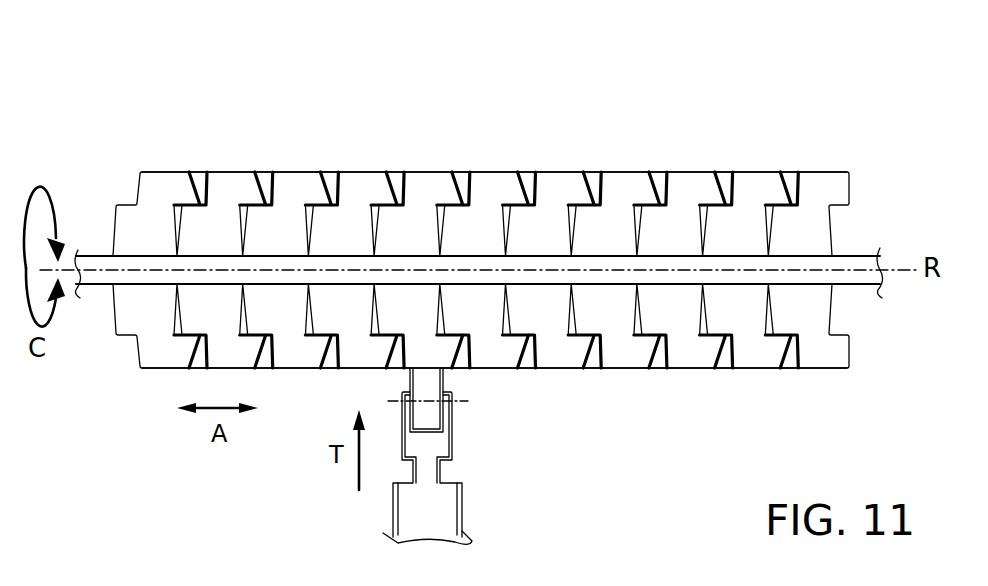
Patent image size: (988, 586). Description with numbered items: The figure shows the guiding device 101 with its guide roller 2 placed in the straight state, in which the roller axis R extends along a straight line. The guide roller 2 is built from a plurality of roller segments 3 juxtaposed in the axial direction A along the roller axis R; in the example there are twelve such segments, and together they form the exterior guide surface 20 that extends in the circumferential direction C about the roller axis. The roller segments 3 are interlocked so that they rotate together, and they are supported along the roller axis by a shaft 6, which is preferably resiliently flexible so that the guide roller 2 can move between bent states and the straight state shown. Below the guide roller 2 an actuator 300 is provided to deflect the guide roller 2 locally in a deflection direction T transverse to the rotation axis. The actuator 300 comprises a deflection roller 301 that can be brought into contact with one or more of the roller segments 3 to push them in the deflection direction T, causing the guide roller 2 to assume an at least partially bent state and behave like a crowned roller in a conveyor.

The rotor assembly 101 is at (148, 96).
The guide roller 2 is at (232, 172).
The exterior guide surface 20 is at (343, 172).
The roller segments 3 is at (545, 183).
The shaft 6 is at (90, 253).
The actuator 300 is at (442, 475).
The deflection roller 301 is at (433, 383).